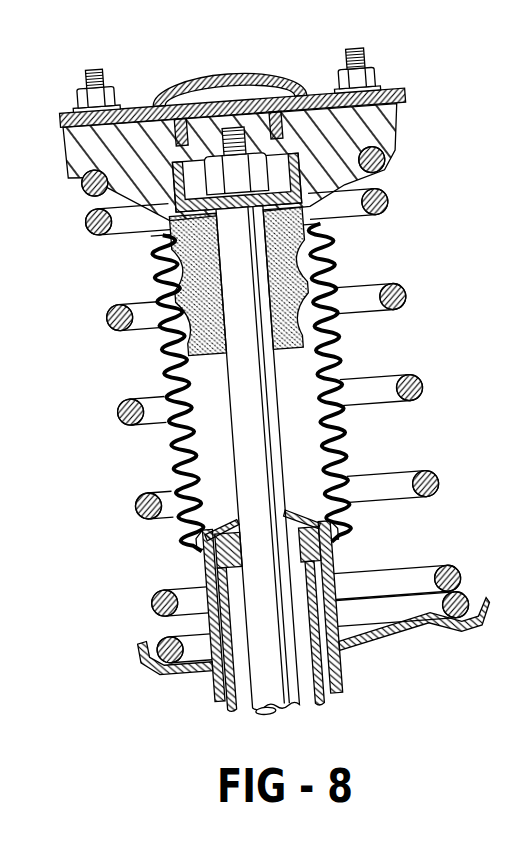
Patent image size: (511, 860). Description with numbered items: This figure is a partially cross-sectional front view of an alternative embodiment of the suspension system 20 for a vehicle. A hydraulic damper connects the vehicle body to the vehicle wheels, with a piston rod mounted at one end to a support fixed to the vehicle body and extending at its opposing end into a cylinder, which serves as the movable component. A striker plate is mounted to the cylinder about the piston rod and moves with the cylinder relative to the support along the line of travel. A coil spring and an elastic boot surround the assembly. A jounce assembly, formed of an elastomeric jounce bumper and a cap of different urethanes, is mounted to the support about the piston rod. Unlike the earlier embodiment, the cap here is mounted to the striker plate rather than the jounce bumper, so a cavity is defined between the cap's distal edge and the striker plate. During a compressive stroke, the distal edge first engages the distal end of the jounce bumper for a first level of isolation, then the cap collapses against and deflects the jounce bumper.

The suspension system 20 is at (276, 384).